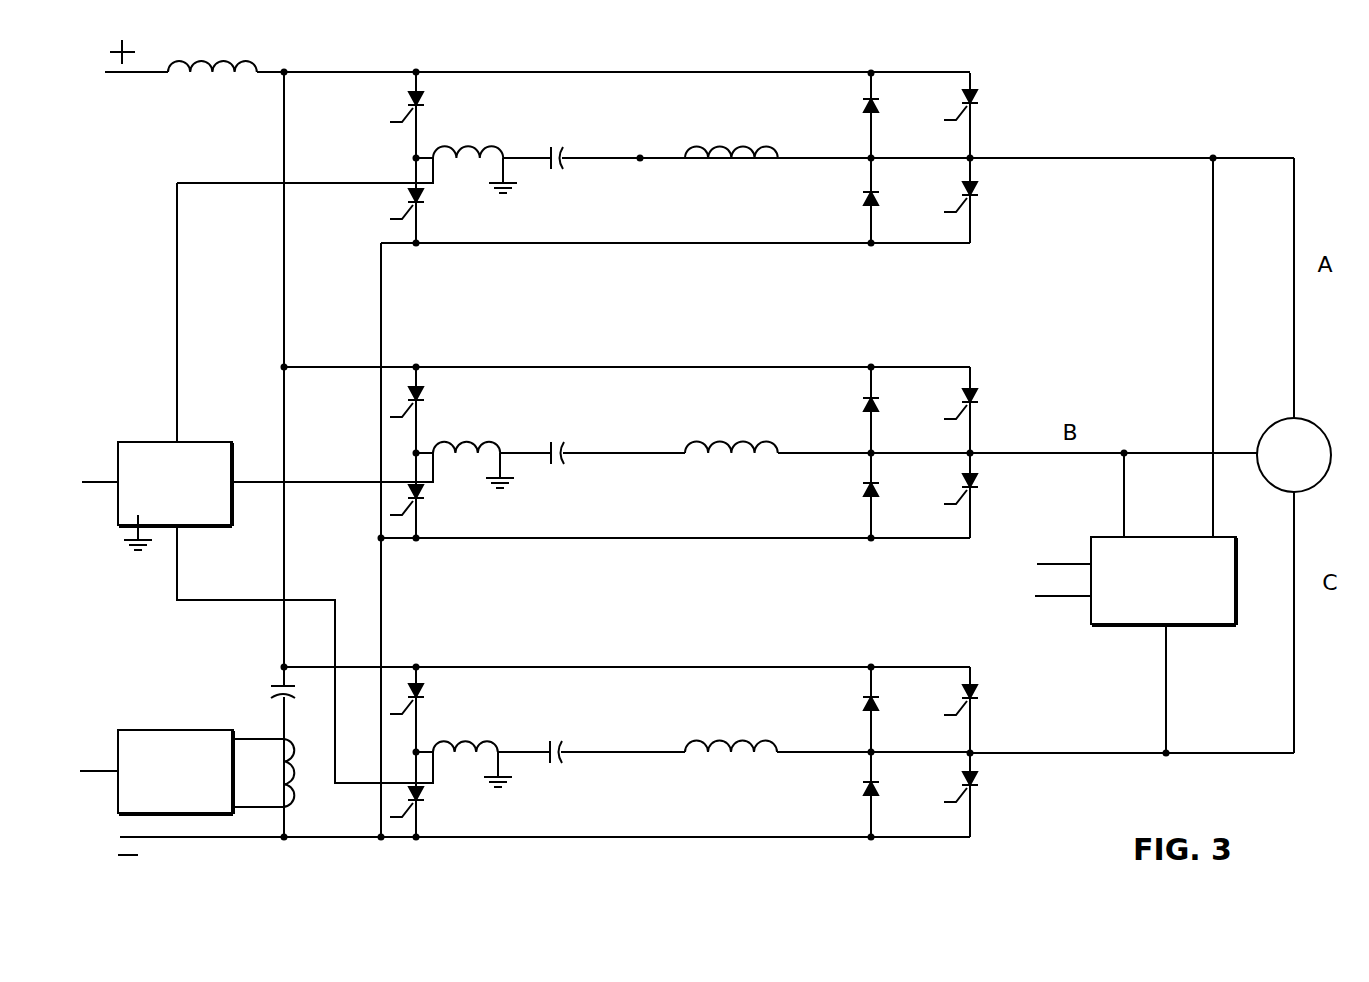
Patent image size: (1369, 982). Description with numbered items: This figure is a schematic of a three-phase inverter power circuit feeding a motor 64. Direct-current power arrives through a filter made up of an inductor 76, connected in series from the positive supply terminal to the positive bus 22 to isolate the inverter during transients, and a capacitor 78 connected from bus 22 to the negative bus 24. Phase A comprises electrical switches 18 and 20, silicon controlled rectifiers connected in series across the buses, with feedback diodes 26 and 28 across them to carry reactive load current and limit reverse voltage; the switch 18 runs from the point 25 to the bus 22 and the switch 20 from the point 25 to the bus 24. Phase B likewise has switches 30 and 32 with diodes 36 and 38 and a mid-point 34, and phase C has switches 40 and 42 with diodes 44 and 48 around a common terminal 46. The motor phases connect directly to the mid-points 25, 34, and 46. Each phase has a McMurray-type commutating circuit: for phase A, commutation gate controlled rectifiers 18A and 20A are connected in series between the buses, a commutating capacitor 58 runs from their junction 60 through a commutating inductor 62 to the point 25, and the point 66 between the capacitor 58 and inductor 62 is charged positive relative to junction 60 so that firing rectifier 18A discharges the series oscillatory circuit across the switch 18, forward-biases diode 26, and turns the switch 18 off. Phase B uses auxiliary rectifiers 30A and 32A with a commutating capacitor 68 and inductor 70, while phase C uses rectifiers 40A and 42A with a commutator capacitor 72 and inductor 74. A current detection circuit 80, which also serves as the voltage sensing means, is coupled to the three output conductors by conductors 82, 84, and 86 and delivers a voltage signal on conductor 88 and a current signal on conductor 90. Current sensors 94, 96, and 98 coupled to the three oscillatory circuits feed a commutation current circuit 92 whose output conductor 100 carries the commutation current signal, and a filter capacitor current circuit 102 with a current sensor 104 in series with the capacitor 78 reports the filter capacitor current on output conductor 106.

The electrical switch 18 is at (984, 106).
The commutation gate controlled rectifier 18A is at (405, 110).
The electrical switch 20 is at (983, 200).
The commutation gate controlled rectifier 20A is at (408, 211).
The positive supply bus 22 is at (358, 72).
The negative supply bus 24 is at (324, 843).
The point 25 is at (980, 158).
The diode 26 is at (862, 105).
The diode 28 is at (862, 203).
The electrical switch 30 is at (984, 399).
The auxiliary commutating controlled rectifier 30A is at (428, 404).
The electrical switch 32 is at (982, 492).
The auxiliary commutating controlled rectifier 32A is at (428, 500).
The point 34 is at (982, 450).
The diode 36 is at (862, 404).
The diode 38 is at (862, 484).
The electrical switch 40 is at (984, 698).
The auxiliary commutating controlled rectifier 40A is at (430, 697).
The electrical switch 42 is at (983, 790).
The auxiliary commutating controlled rectifier 42A is at (428, 802).
The diode 44 is at (862, 700).
The common terminal 46 is at (982, 750).
The diode 48 is at (862, 786).
The commutating capacitor 58 is at (559, 148).
The junction 60 is at (413, 159).
The commutating inductor 62 is at (730, 162).
The motor 64 is at (1318, 424).
The point 66 is at (642, 163).
The commutating capacitor 68 is at (556, 462).
The commutating inductor 70 is at (727, 464).
The commutator capacitor 72 is at (556, 762).
The commutating inductor 74 is at (729, 762).
The inductor 76 is at (236, 60).
The capacitor 78 is at (269, 690).
The current detection circuit 80 is at (1214, 627).
The conductor 82 is at (1213, 208).
The conductor 84 is at (1122, 504).
The conductor 86 is at (1168, 698).
The conductor 88 is at (1022, 561).
The conductor 90 is at (1022, 595).
The commutation current circuit 92 is at (150, 442).
The current sensor 94 is at (464, 156).
The current sensor 96 is at (454, 450).
The current sensor 98 is at (458, 742).
The output conductor 100 is at (104, 483).
The filter capacitor current circuit 102 is at (163, 730).
The current sensor 104 is at (296, 802).
The output conductor 106 is at (100, 768).